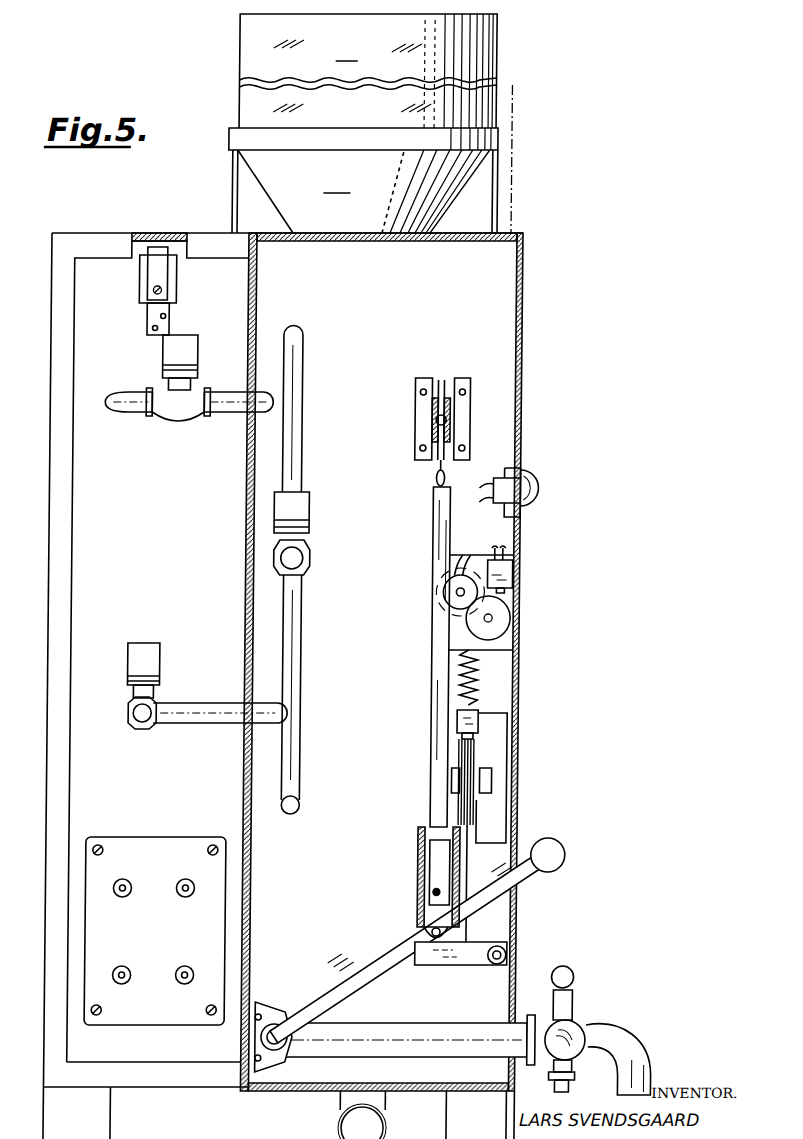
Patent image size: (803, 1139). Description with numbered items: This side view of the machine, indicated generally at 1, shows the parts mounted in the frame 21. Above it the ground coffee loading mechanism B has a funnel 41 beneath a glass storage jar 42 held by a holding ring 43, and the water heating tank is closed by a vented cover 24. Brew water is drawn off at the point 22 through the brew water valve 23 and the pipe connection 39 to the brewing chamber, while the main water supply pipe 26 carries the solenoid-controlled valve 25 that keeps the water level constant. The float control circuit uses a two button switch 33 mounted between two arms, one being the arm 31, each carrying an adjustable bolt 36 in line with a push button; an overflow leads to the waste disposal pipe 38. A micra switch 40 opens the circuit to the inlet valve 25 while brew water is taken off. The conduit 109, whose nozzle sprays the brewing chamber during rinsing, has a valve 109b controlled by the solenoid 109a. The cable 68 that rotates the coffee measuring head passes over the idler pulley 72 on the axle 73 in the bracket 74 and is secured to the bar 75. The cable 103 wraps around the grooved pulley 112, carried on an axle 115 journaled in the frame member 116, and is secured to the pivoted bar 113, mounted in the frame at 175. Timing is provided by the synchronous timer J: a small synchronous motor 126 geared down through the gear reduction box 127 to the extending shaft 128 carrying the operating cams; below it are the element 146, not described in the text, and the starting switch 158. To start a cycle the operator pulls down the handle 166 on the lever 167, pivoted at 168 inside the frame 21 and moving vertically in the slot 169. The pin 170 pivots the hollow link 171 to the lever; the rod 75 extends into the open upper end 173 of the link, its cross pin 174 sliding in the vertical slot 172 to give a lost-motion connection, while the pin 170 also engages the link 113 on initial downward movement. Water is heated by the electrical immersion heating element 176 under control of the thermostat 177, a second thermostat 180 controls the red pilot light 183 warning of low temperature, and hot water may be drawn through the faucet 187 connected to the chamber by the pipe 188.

The dispensing apparatus 1 is at (513, 103).
The frame 21 is at (257, 948).
The draw-off point 22 is at (114, 394).
The brew water valve 23 is at (185, 410).
The vented cover 24 is at (172, 234).
The solenoid-controlled valve 25 is at (138, 688).
The main water supply pipe 26 is at (306, 665).
The arm 31 is at (150, 263).
The two button switch 33 is at (148, 298).
The adjustable bolt 36 is at (162, 290).
The waste disposal pipe 38 is at (347, 1128).
The pipe connection 39 is at (238, 410).
The micra switch 40 is at (517, 576).
The funnel 41 is at (365, 191).
The glass storage jar 42 is at (240, 40).
The holding ring 43 is at (238, 133).
The flexible cable 68 is at (440, 466).
The idler pulley 72 is at (456, 394).
The axle 73 is at (434, 422).
The bracket 74 is at (434, 410).
The bar 75 is at (436, 515).
The cable 103 is at (470, 890).
The conduit 109 is at (304, 388).
The solenoid 109a is at (372, 518).
The valve 109b is at (372, 573).
The grooved pulley 112 is at (462, 757).
The pivoted bar 113 is at (452, 966).
The axle 115 is at (498, 780).
The frame member 116 is at (486, 812).
The synchronous motor 126 is at (460, 592).
The gear reduction box 127 is at (502, 634).
The extending shaft 128 is at (496, 617).
The spring 146 is at (484, 690).
The starting switch 158 is at (462, 721).
The handle 166 is at (570, 858).
The lever 167 is at (365, 974).
The pivot 168 is at (281, 1047).
The slot 169 is at (520, 927).
The pin 170 is at (436, 930).
The hollow link 171 is at (424, 866).
The slot 172 is at (432, 878).
The open upper end 173 is at (424, 830).
The cross pin 174 is at (440, 893).
The pivot 175 is at (500, 964).
The electrical immersion heating element 176 is at (155, 931).
The thermostat 177 is at (193, 880).
The second thermostat 180 is at (129, 897).
The pilot light 183 is at (543, 488).
The faucet 187 is at (628, 1050).
The pipe 188 is at (385, 1032).